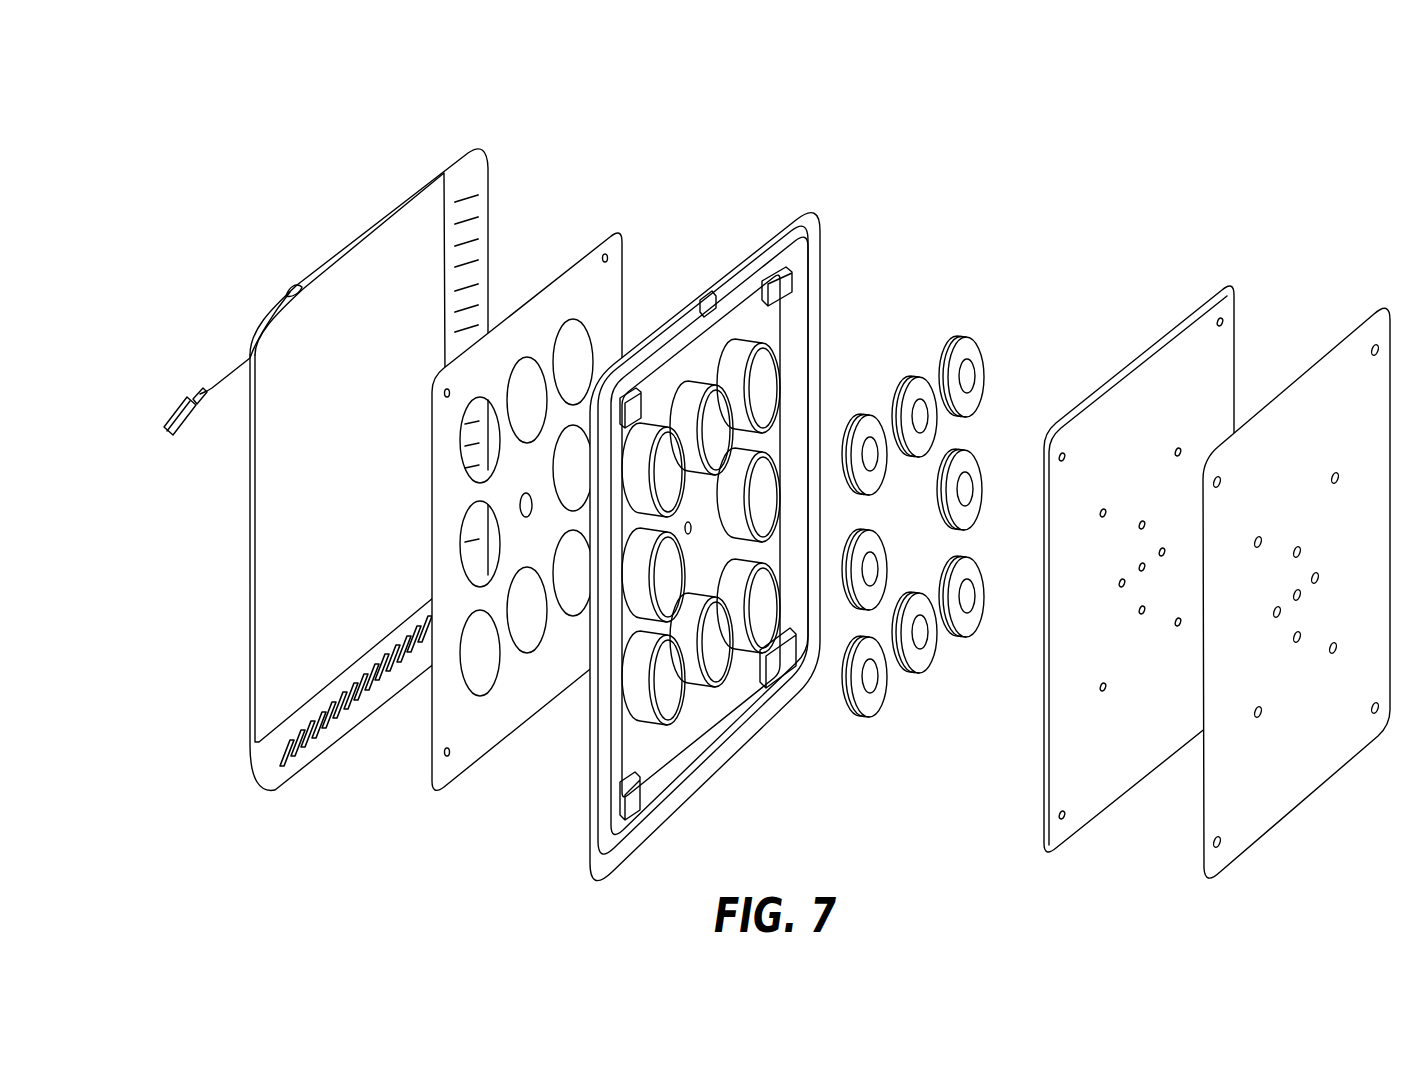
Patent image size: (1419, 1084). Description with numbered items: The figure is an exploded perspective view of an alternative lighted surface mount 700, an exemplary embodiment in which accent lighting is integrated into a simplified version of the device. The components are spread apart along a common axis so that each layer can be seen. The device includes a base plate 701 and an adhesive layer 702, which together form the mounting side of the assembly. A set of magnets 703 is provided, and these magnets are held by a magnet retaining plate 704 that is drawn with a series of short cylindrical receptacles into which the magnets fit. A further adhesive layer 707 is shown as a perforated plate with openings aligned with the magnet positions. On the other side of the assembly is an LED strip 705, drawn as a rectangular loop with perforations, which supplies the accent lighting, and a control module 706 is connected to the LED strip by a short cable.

The lighted surface mount 700 is at (265, 188).
The base plate 701 is at (1227, 285).
The adhesive layer 702 is at (1377, 308).
The magnets 703 is at (963, 337).
The magnet retaining plate 704 is at (822, 243).
The LED strip 705 is at (273, 758).
The control module 706 is at (177, 407).
The adhesive layer 707 is at (624, 247).